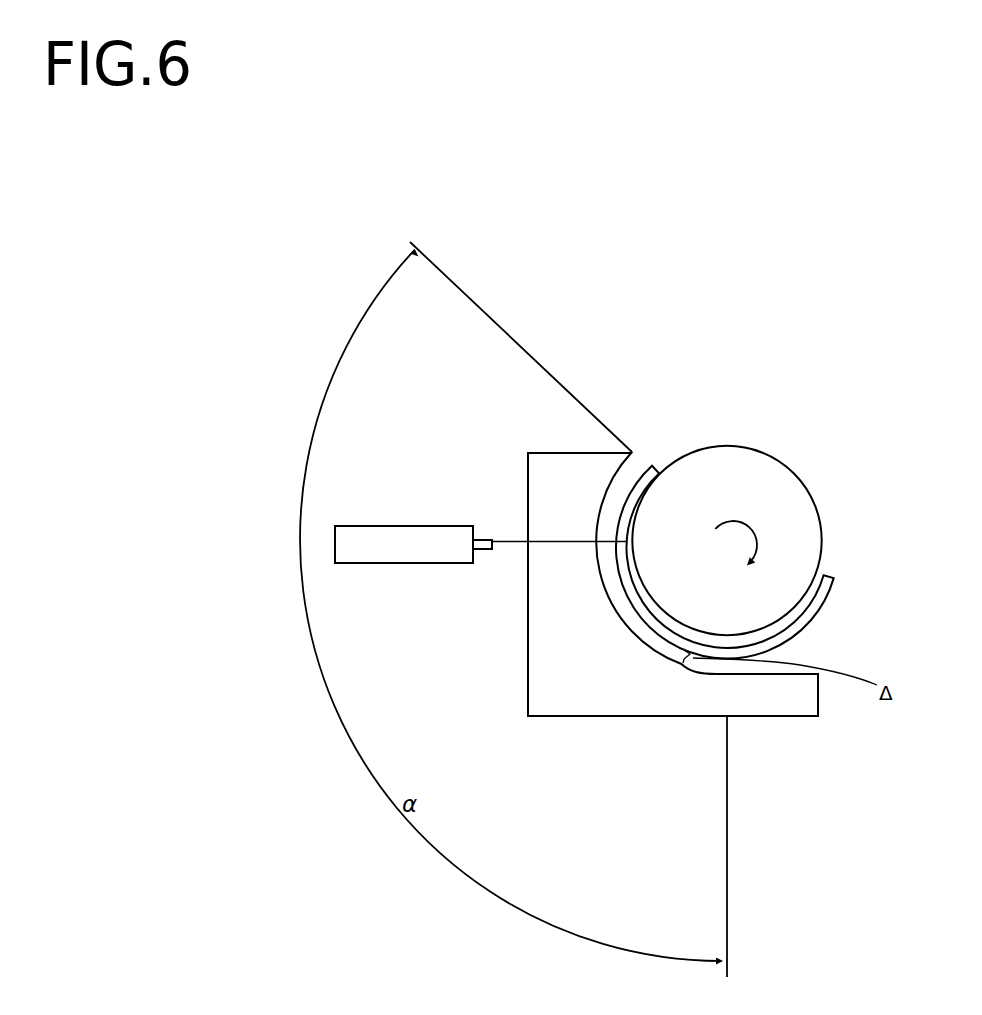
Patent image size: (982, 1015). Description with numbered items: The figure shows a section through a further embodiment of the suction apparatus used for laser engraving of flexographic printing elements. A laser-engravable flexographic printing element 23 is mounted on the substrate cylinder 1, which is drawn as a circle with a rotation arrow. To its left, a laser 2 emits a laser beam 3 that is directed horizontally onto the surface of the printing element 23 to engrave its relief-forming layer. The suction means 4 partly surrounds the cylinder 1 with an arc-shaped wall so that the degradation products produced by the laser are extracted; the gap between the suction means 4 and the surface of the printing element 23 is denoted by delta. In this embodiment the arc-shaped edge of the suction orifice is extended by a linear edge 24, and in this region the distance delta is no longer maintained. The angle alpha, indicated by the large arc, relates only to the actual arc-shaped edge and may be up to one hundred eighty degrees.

The cylinder 1 is at (793, 498).
The laser 2 is at (380, 548).
The laser beam 3 is at (562, 523).
The suction means 4 is at (545, 452).
The laser-engravable flexographic printing element 23 is at (825, 600).
The linear edge 24 is at (767, 675).